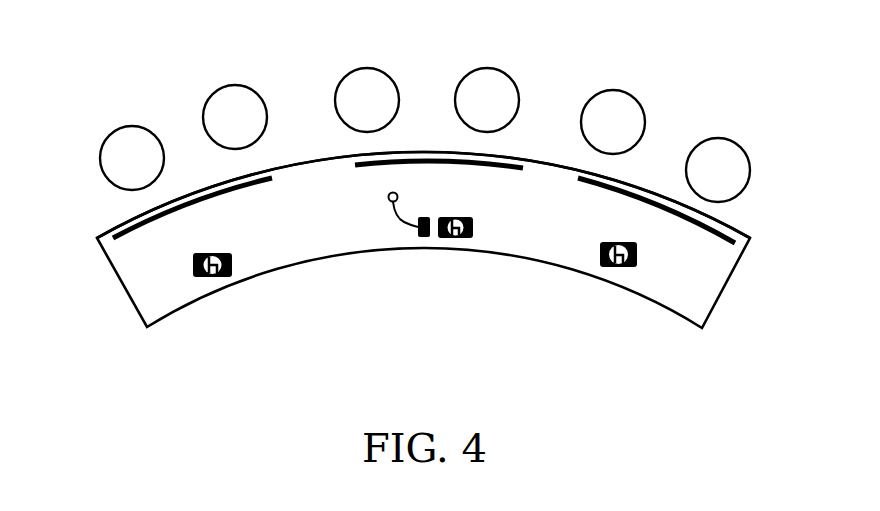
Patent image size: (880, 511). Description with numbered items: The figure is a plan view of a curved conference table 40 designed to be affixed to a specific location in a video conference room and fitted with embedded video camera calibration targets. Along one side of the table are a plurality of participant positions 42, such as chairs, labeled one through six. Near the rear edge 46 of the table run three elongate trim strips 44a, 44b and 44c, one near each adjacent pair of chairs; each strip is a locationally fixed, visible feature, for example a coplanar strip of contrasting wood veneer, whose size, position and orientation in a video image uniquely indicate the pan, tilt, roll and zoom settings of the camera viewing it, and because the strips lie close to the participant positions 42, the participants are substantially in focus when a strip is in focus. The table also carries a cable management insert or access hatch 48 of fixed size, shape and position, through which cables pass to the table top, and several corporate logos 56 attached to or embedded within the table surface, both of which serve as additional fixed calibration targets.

The curved conference table 40 is at (331, 224).
The participant positions 42 is at (217, 115).
The trim strip 44a is at (142, 228).
The trim strip 44b is at (512, 160).
The trim strip 44c is at (647, 203).
The rear edge 46 is at (333, 158).
The cable management insert 48 is at (420, 238).
The corporate logo 56 is at (218, 277).